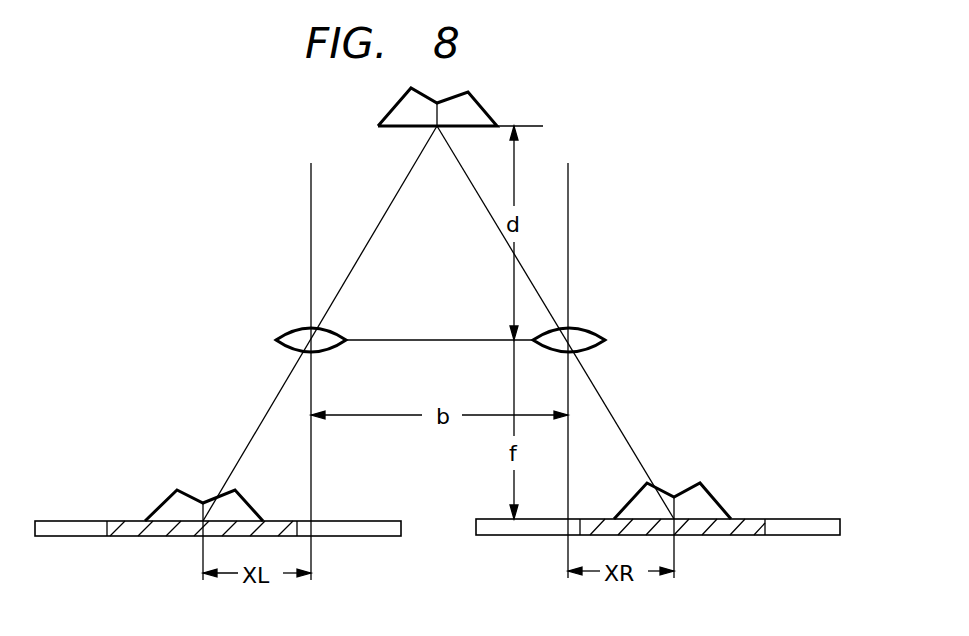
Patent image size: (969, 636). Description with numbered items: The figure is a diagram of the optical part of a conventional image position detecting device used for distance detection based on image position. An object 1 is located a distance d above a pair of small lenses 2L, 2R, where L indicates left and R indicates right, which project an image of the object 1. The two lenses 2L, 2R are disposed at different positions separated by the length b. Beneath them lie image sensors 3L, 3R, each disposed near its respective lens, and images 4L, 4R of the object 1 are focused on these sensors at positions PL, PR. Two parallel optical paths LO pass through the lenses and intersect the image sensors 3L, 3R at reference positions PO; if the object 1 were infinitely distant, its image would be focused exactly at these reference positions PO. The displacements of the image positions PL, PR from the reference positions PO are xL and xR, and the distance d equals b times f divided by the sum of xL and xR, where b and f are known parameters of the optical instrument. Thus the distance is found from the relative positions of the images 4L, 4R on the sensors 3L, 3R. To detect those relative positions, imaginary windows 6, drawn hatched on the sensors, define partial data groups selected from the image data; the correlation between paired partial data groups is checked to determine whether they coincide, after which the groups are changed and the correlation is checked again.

The object 1 is at (480, 101).
The left small lens 2L is at (284, 334).
The right small lens 2R is at (585, 333).
The left image sensor 3L is at (49, 521).
The right image sensor 3R is at (825, 519).
The left image of the object 4L is at (178, 490).
The right image of the object 4R is at (699, 483).
The imaginary window 6 is at (116, 521).
The parallel optical path LO is at (311, 198).
The reference position PO is at (314, 521).
The left image position PL is at (202, 555).
The right image position PR is at (676, 540).